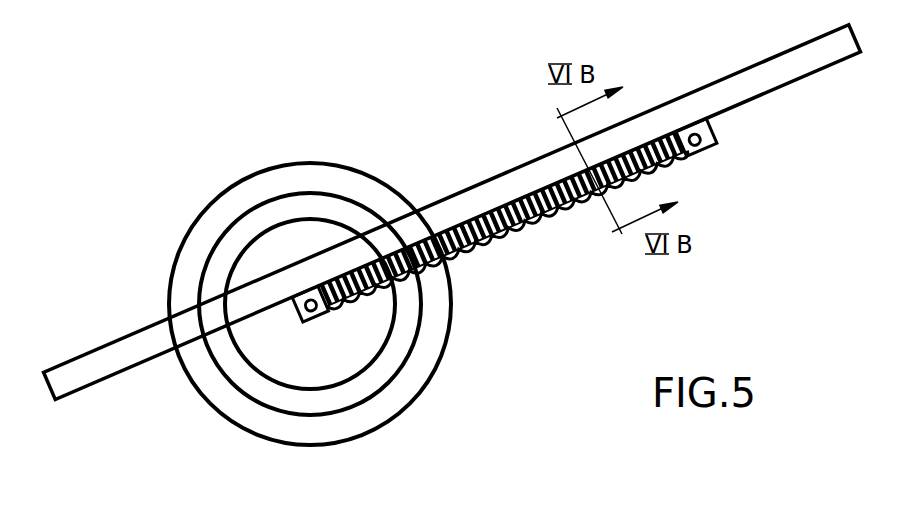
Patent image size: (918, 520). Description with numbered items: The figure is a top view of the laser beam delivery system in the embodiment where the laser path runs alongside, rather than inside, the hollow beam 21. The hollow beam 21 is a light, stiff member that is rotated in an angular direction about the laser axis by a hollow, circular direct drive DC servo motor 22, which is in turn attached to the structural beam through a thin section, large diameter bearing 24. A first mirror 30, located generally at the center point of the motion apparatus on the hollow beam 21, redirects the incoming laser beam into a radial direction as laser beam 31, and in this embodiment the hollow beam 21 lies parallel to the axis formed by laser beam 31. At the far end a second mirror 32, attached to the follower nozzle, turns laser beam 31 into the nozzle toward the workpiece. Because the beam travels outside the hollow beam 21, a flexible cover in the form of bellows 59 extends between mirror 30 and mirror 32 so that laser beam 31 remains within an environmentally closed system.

The hollow beam 21 is at (137, 337).
The direct drive DC servo motor 22 is at (303, 211).
The bearing 24 is at (255, 172).
The first mirror 30 is at (306, 326).
The laser beam 31 is at (478, 260).
The second mirror 32 is at (684, 130).
The bellows 59 is at (473, 250).